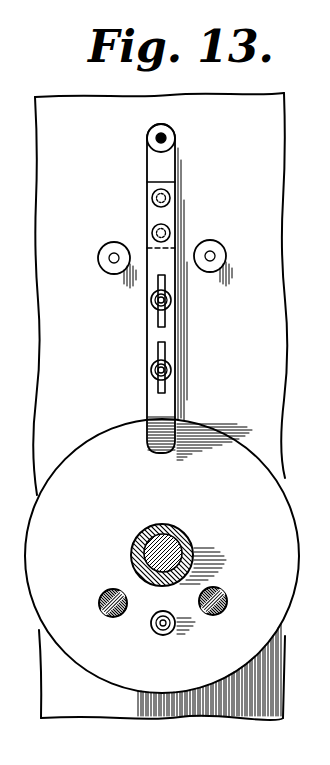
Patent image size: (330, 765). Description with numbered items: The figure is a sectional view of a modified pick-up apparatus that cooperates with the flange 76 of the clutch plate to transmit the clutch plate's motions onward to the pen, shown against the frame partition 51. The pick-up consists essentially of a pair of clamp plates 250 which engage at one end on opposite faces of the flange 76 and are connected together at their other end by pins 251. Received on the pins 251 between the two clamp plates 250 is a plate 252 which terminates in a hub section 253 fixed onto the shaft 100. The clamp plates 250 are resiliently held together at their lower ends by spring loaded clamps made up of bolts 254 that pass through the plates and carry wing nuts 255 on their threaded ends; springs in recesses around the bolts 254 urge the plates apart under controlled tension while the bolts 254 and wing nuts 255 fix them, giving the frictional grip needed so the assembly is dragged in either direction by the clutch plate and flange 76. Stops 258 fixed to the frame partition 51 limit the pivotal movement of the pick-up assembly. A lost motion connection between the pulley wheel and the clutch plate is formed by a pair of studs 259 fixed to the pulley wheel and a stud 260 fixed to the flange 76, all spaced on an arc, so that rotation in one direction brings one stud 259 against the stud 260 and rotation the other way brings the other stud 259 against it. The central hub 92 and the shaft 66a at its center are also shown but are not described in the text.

The frame partition 51 is at (272, 270).
The flange 76 is at (293, 534).
The plate 252 is at (155, 163).
The clamp plates 250 is at (160, 410).
The hub section 253 is at (153, 128).
The shaft 100 is at (164, 135).
The pins 251 is at (152, 232).
The stops 258 is at (114, 258).
The bolts 254 is at (152, 300).
The wing nuts 255 is at (158, 350).
The hub 92 is at (184, 534).
The shaft 66a is at (160, 540).
The studs 259 is at (120, 586).
The stud 260 is at (155, 633).